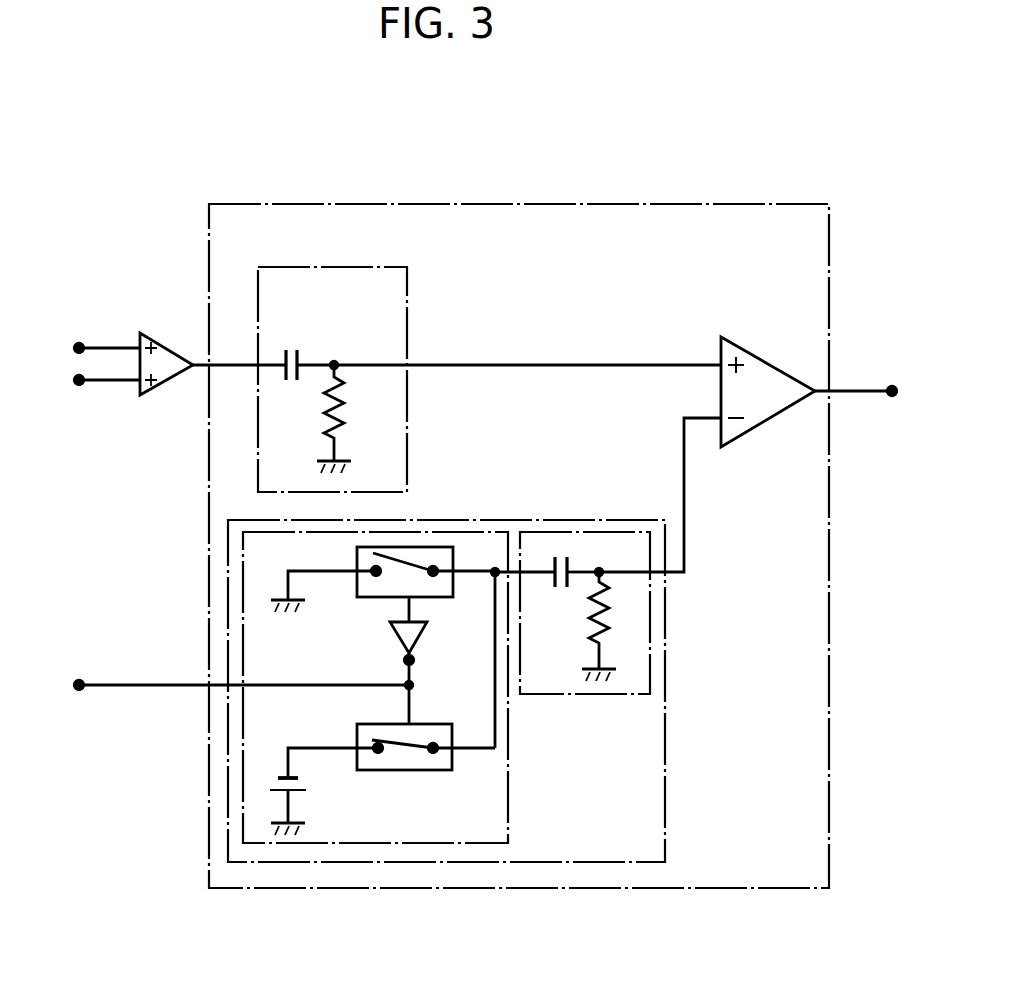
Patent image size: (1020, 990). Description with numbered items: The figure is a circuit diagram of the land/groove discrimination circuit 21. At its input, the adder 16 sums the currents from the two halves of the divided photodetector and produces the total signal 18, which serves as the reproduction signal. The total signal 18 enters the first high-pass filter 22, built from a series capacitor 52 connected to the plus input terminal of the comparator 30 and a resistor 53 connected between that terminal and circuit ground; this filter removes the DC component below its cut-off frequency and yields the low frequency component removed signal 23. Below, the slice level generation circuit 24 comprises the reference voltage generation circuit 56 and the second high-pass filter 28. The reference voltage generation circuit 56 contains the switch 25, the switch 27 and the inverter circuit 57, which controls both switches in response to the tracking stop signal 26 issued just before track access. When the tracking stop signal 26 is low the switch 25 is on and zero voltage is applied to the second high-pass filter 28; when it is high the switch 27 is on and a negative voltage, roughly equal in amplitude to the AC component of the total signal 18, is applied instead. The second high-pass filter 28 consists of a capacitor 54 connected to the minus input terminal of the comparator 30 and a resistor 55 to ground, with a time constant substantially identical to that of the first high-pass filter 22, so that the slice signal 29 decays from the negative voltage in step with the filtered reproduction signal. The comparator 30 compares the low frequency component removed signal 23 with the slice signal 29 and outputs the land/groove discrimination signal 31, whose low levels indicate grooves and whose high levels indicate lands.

The adder 16 is at (174, 346).
The total signal 18 is at (232, 366).
The land/groove discrimination circuit 21 is at (638, 204).
The first high-pass filter 22 is at (407, 310).
The low frequency component removed signal 23 is at (545, 364).
The slice level generation circuit 24 is at (665, 830).
The switch 25 is at (455, 556).
The tracking stop signal 26 is at (128, 684).
The switch 27 is at (425, 770).
The second high-pass filter 28 is at (605, 694).
The slice signal 29 is at (684, 520).
The comparator 30 is at (775, 418).
The land/groove discrimination signal 31 is at (846, 390).
The capacitor 52 is at (300, 356).
The resistor 53 is at (340, 425).
The capacitor 54 is at (571, 560).
The resistor R2 55 is at (604, 636).
The reference voltage generation circuit 56 is at (462, 843).
The inverter circuit 57 is at (418, 640).